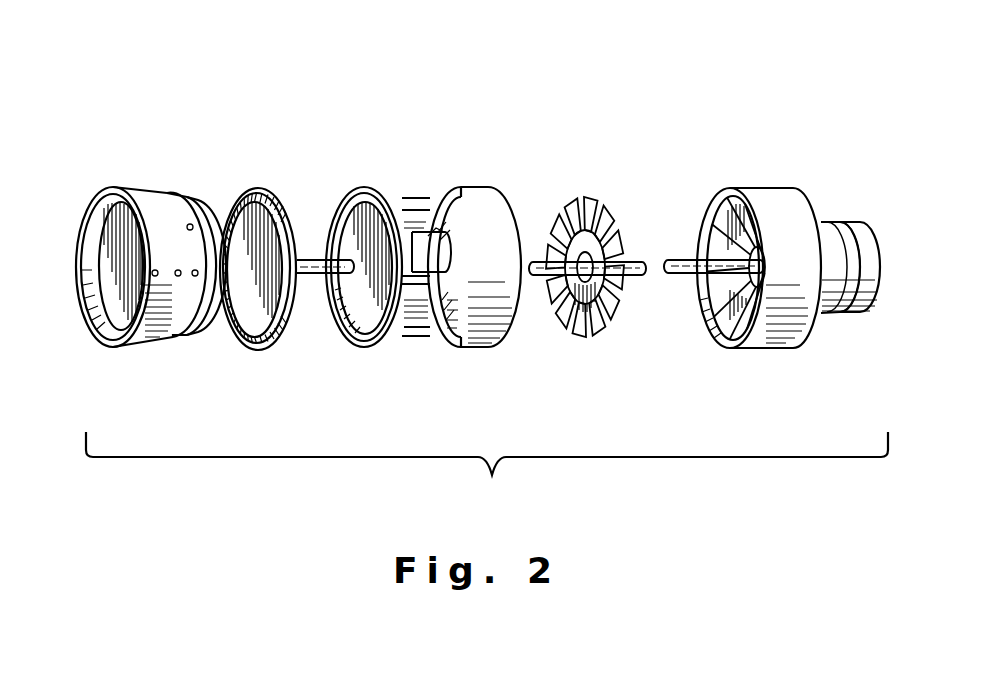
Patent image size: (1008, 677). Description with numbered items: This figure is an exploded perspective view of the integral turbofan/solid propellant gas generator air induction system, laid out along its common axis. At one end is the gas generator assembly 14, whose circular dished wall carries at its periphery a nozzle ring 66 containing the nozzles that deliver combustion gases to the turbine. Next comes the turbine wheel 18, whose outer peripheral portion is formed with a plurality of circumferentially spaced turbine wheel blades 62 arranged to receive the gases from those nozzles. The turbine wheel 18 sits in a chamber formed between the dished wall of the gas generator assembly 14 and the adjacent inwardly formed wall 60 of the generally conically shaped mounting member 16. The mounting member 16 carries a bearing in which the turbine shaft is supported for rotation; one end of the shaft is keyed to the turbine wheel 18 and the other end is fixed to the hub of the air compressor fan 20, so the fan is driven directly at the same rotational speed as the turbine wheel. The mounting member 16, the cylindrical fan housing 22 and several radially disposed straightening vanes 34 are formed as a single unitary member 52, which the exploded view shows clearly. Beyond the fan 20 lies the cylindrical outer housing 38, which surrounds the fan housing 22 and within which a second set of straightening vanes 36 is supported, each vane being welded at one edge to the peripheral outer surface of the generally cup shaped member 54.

The gas generator assembly 14 is at (138, 188).
The nozzle ring 66 is at (183, 208).
The turbine wheel 18 is at (283, 197).
The turbine wheel blades 62 is at (260, 196).
The inwardly formed wall 60 is at (366, 300).
The straightening vanes 34 is at (410, 200).
The mounting member 16 is at (433, 260).
The fan housing 22 is at (485, 302).
The unitary member 52 is at (423, 163).
The air compressor fan 20 is at (603, 220).
The outer housing 38 is at (775, 200).
The straightening vanes 36 is at (728, 223).
The cup shaped member 54 is at (738, 318).